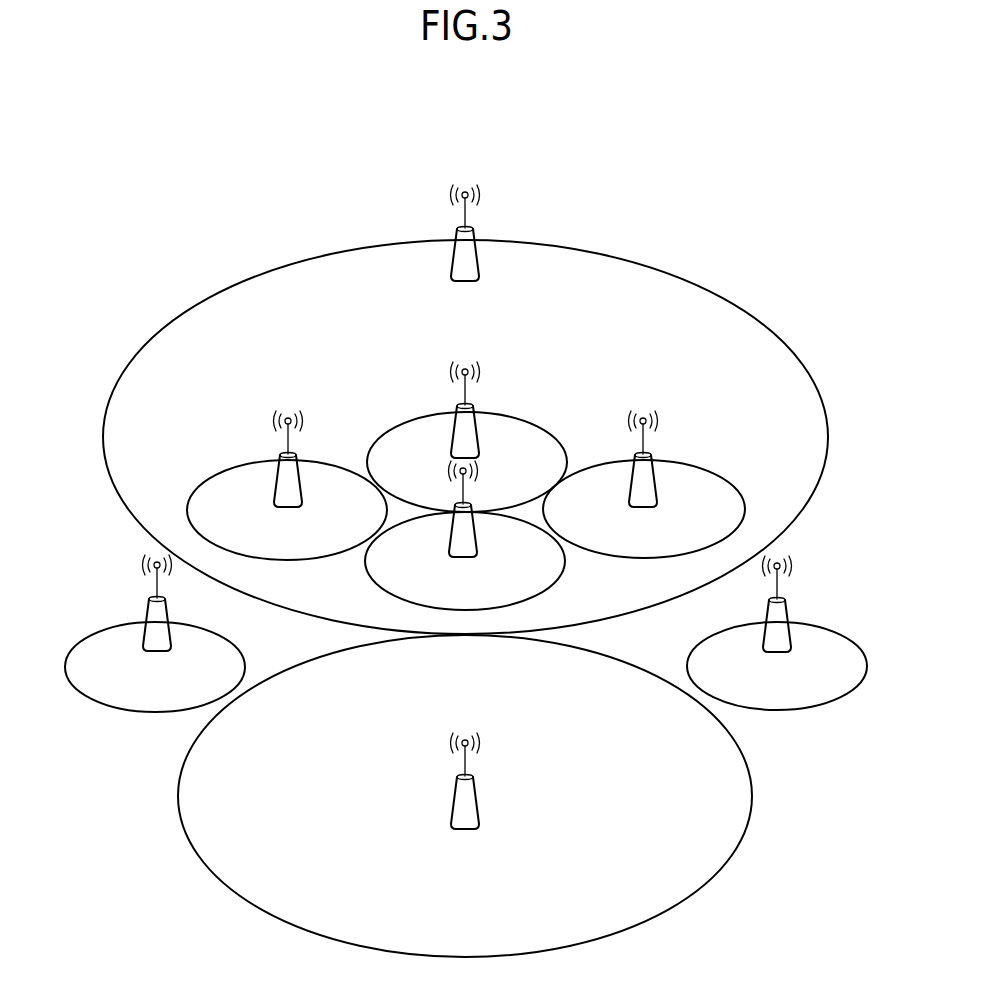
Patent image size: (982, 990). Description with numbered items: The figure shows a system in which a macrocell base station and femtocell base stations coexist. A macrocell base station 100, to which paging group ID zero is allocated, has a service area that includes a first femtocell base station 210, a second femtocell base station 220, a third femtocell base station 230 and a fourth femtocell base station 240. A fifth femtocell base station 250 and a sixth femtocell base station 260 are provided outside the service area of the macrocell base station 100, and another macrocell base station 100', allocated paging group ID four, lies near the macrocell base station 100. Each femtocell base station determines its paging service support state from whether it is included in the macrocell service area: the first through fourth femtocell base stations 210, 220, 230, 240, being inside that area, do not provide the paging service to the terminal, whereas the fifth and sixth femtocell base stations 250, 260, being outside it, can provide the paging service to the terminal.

The macrocell base station 100 is at (465, 382).
The macrocell base station 100' is at (465, 796).
The first femtocell base station 210 is at (288, 437).
The second femtocell base station 220 is at (467, 392).
The third femtocell base station 230 is at (645, 440).
The fourth femtocell base station 240 is at (478, 527).
The fifth femtocell base station 250 is at (157, 582).
The sixth femtocell base station 260 is at (778, 583).